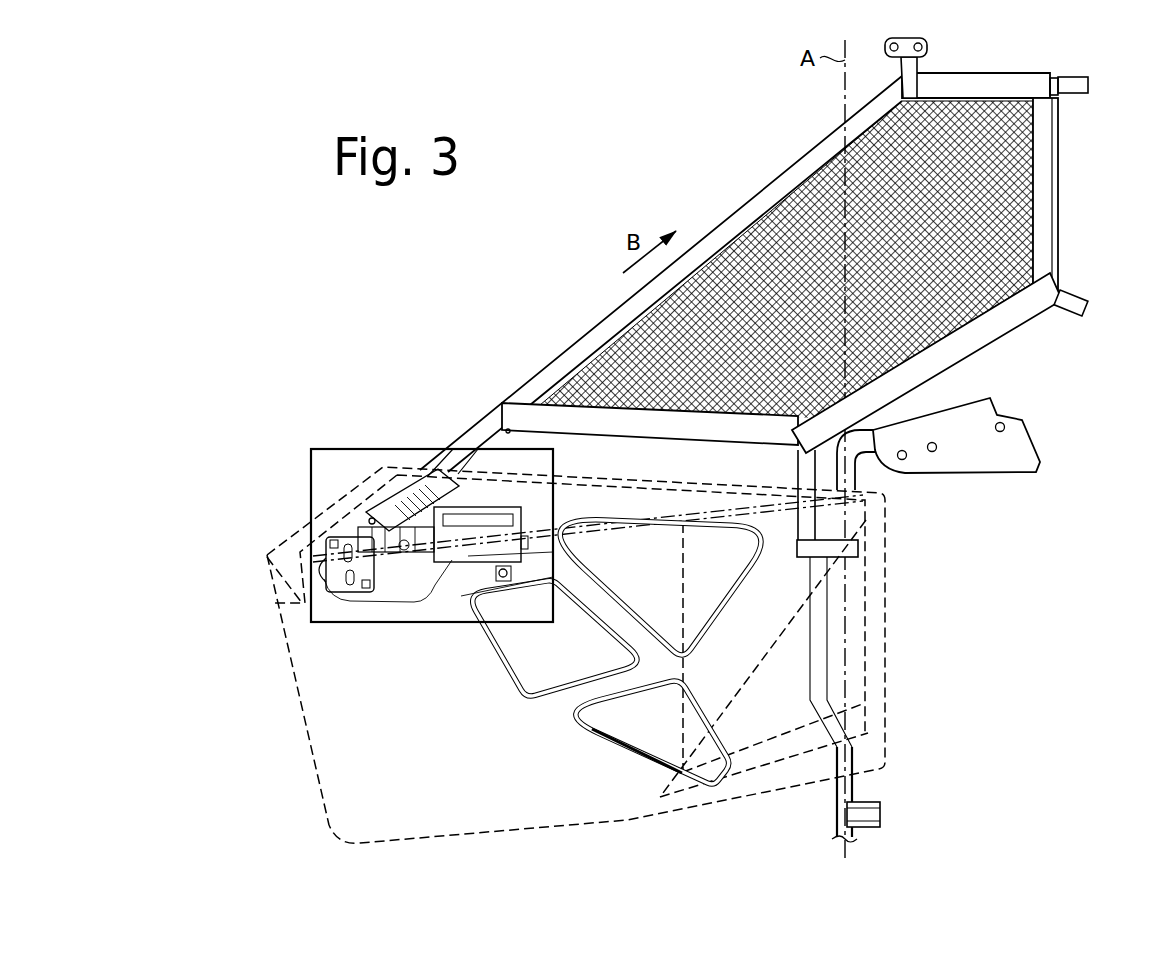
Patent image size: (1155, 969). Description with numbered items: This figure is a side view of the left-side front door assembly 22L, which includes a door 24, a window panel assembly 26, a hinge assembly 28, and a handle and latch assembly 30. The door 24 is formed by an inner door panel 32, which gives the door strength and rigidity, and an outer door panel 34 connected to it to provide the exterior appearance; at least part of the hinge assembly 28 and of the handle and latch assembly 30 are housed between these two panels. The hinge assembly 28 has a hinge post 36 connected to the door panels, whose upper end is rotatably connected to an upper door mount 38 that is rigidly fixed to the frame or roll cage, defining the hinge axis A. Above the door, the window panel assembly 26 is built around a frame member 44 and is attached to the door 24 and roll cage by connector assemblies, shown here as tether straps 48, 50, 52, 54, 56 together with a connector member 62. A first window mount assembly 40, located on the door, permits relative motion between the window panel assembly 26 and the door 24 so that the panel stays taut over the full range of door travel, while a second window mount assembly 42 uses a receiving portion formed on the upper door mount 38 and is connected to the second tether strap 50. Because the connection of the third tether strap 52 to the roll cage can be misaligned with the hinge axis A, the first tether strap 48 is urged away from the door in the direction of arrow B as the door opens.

The left door assembly 22L is at (426, 318).
The door 24 is at (230, 602).
The window panel assembly 26 is at (722, 168).
The hinge assembly 28 is at (1088, 420).
The handle and latch assembly 30 is at (393, 588).
The inner door panel 32 is at (452, 652).
The outer door panel 34 is at (306, 725).
The hinge post 36 is at (810, 689).
The upper door mount 38 is at (861, 462).
The first window mount assembly 40 is at (378, 492).
The second window mount assembly 42 is at (778, 549).
The frame member 44 is at (1058, 185).
The first tether strap 48 is at (475, 431).
The second tether strap 50 is at (797, 470).
The third tether strap 52 is at (914, 82).
The tether strap 54 is at (1090, 86).
The tether strap 56 is at (1088, 307).
The connector member 62 is at (928, 45).